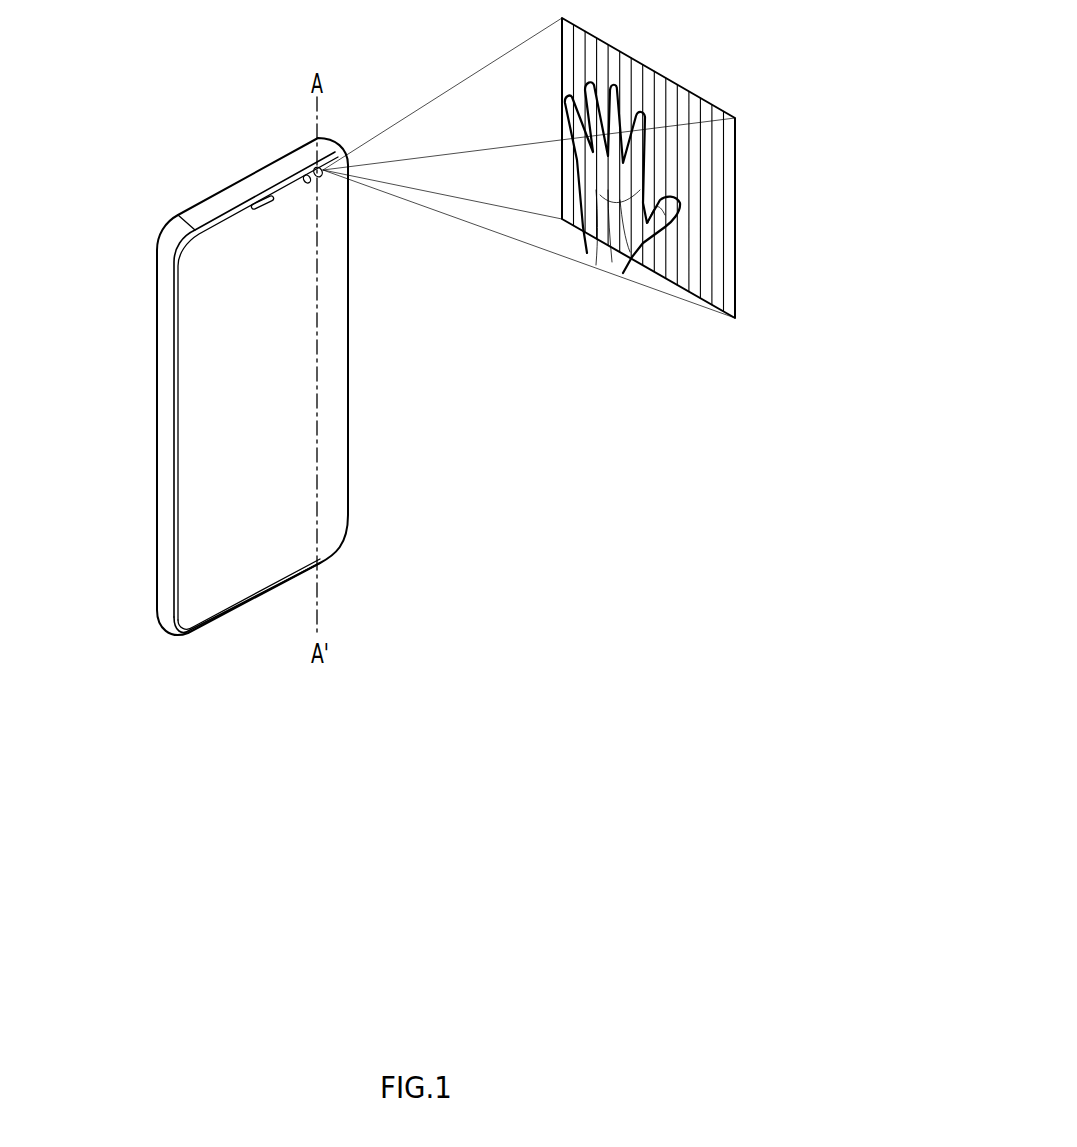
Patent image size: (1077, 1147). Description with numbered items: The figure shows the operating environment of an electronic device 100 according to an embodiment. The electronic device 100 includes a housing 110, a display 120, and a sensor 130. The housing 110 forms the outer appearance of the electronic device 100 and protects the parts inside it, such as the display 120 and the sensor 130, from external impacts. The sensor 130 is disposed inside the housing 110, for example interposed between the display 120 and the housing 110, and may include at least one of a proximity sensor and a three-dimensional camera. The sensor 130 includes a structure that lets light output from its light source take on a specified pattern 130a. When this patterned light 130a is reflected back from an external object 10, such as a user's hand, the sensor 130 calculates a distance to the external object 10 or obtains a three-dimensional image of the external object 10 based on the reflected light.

The external object 10 is at (643, 170).
The electronic device 100 is at (236, 160).
The housing 110 is at (168, 400).
The display 120 is at (285, 418).
The sensor 130 is at (331, 158).
The specified pattern 130a is at (647, 68).